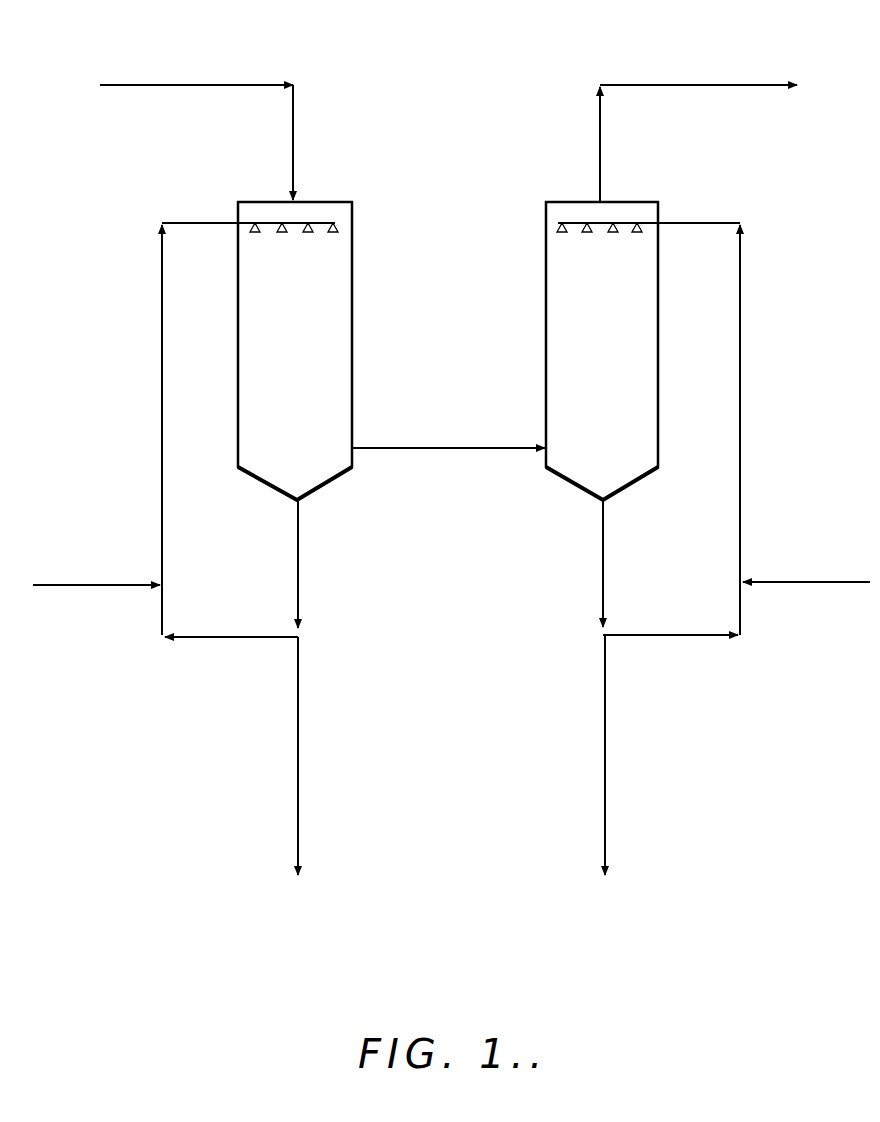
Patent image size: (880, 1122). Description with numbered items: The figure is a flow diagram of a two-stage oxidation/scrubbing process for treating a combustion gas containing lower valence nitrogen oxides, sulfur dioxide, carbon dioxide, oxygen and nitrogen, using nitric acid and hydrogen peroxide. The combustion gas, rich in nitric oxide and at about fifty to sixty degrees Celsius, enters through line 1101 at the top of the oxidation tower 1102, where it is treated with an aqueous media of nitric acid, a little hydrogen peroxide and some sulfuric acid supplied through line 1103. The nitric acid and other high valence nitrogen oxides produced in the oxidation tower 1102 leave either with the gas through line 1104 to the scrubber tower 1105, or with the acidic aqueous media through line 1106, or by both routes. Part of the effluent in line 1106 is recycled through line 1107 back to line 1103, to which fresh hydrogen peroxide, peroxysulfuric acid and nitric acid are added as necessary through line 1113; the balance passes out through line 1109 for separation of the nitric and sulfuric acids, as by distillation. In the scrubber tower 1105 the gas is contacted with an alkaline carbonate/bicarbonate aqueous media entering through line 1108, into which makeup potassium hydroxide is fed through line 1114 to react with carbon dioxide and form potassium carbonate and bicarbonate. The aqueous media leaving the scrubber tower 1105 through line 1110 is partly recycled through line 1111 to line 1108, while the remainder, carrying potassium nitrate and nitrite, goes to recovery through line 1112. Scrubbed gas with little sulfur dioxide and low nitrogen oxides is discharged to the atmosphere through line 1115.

The line 1101 is at (200, 60).
The oxidation tower 1102 is at (312, 328).
The line 1103 is at (158, 398).
The line 1104 is at (448, 447).
The scrubber tower 1105 is at (616, 334).
The line 1106 is at (301, 557).
The line 1107 is at (234, 640).
The line 1108 is at (742, 380).
The line 1109 is at (300, 778).
The line 1110 is at (601, 566).
The line 1111 is at (685, 638).
The line 1112 is at (605, 783).
The line 1113 is at (76, 588).
The line 1114 is at (832, 586).
The line 1115 is at (716, 82).